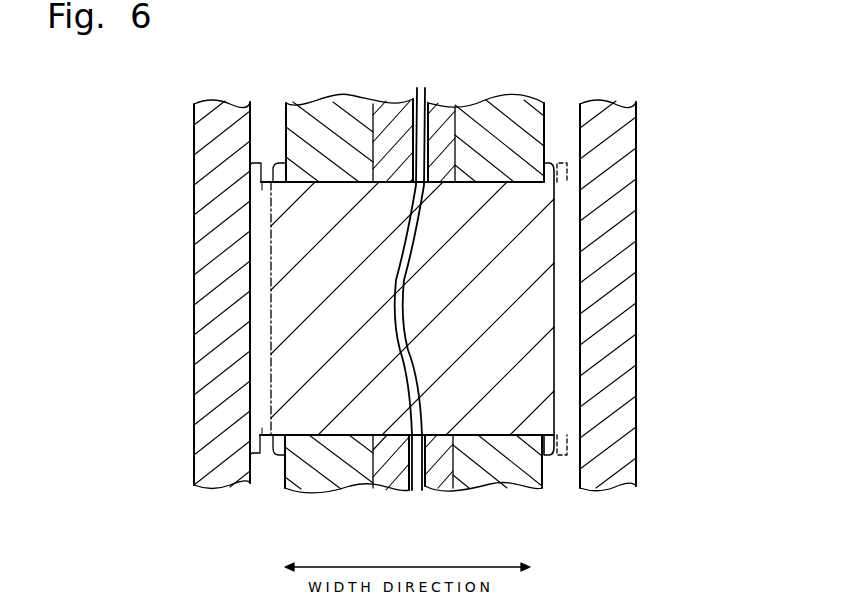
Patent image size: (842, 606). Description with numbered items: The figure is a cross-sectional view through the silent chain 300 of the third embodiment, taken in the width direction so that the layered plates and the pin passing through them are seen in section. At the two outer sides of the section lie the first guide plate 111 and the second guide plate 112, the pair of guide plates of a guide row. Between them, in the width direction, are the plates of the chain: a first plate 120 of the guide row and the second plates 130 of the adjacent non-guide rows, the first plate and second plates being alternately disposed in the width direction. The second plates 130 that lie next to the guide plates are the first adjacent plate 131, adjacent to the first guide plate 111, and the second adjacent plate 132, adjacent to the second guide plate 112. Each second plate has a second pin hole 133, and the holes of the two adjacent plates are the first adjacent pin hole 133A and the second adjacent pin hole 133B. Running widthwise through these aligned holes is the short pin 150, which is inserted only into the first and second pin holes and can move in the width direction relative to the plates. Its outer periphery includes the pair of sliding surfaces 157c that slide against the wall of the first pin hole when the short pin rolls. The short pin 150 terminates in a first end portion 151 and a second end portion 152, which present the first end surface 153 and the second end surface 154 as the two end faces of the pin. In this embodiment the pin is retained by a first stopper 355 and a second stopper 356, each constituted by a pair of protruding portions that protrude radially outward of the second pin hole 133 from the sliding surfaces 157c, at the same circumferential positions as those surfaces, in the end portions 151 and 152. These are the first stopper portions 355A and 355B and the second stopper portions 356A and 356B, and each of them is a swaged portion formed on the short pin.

The silent chain 300 is at (176, 110).
The second guide plate 112 is at (235, 141).
The first guide plate 111 is at (609, 155).
The second pin hole 133 is at (434, 124).
The second adjacent pin hole 133B is at (345, 182).
The first adjacent pin hole 133A is at (517, 182).
The second plate 130 is at (439, 489).
The second adjacent plate 132 is at (322, 475).
The first adjacent plate 131 is at (503, 470).
The sliding surface 157c is at (440, 172).
The first plate 120 is at (422, 490).
The short pin 150 is at (289, 382).
The first end portion 151 is at (545, 300).
The second end portion 152 is at (262, 283).
The first end surface 153 is at (554, 363).
The second end surface 154 is at (262, 322).
The second stopper 356 is at (192, 330).
The second stopper portion 356B is at (252, 168).
The second stopper portion 356A is at (255, 452).
The first stopper 355 is at (632, 326).
The first stopper portion 355B is at (548, 170).
The first stopper portion 355A is at (548, 450).